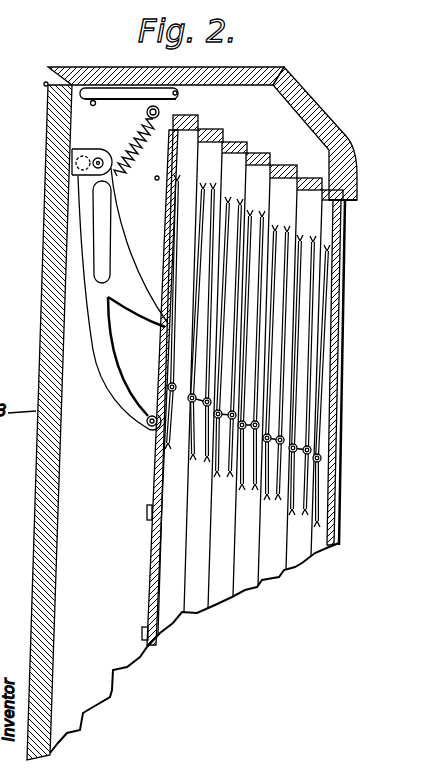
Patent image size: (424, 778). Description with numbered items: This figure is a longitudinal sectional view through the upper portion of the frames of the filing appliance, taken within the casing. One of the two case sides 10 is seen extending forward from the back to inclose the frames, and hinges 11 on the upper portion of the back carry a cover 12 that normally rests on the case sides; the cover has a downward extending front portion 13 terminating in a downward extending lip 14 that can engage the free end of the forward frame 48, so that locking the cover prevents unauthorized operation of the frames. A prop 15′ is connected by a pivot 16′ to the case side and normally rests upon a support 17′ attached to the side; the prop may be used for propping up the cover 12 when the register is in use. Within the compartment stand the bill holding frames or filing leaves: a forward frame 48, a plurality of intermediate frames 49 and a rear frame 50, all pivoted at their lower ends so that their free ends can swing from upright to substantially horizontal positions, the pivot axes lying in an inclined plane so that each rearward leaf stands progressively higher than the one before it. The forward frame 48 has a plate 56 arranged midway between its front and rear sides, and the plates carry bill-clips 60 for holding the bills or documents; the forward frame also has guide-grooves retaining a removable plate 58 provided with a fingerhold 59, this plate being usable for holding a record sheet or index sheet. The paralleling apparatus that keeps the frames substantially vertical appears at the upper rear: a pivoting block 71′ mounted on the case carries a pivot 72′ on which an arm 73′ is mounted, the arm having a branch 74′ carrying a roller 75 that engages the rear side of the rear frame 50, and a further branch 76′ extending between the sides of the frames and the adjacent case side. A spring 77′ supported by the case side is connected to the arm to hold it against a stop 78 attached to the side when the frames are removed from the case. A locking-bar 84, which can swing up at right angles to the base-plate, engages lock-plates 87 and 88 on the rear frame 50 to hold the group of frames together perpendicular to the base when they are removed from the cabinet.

The case side 10 is at (183, 422).
The hinges 11 is at (45, 86).
The cover 12 is at (201, 68).
The downward extending front portion 13 is at (350, 153).
The downward extending lip 14 is at (357, 202).
The prop 15′ is at (124, 92).
The pivot 16′ is at (175, 91).
The support 17′ is at (91, 104).
The forward frame 48 is at (344, 278).
The intermediate frames 49 is at (276, 137).
The rear frame 50 is at (200, 108).
The plate 56 is at (276, 168).
The plate 58 is at (340, 358).
The fingerhold 59 is at (357, 195).
The bill-clips 60 is at (167, 200).
The pivoting block 71′ is at (92, 165).
The pivot 72′ is at (49, 200).
The arm 73′ is at (88, 258).
The branch 74′ is at (88, 343).
The roller 75 is at (147, 425).
The branch 76′ is at (135, 293).
The spring 77′ is at (143, 148).
The stop 78 is at (158, 171).
The locking-bar 84 is at (153, 565).
The lock-plate 87 is at (142, 633).
The lock-plate 88 is at (147, 512).